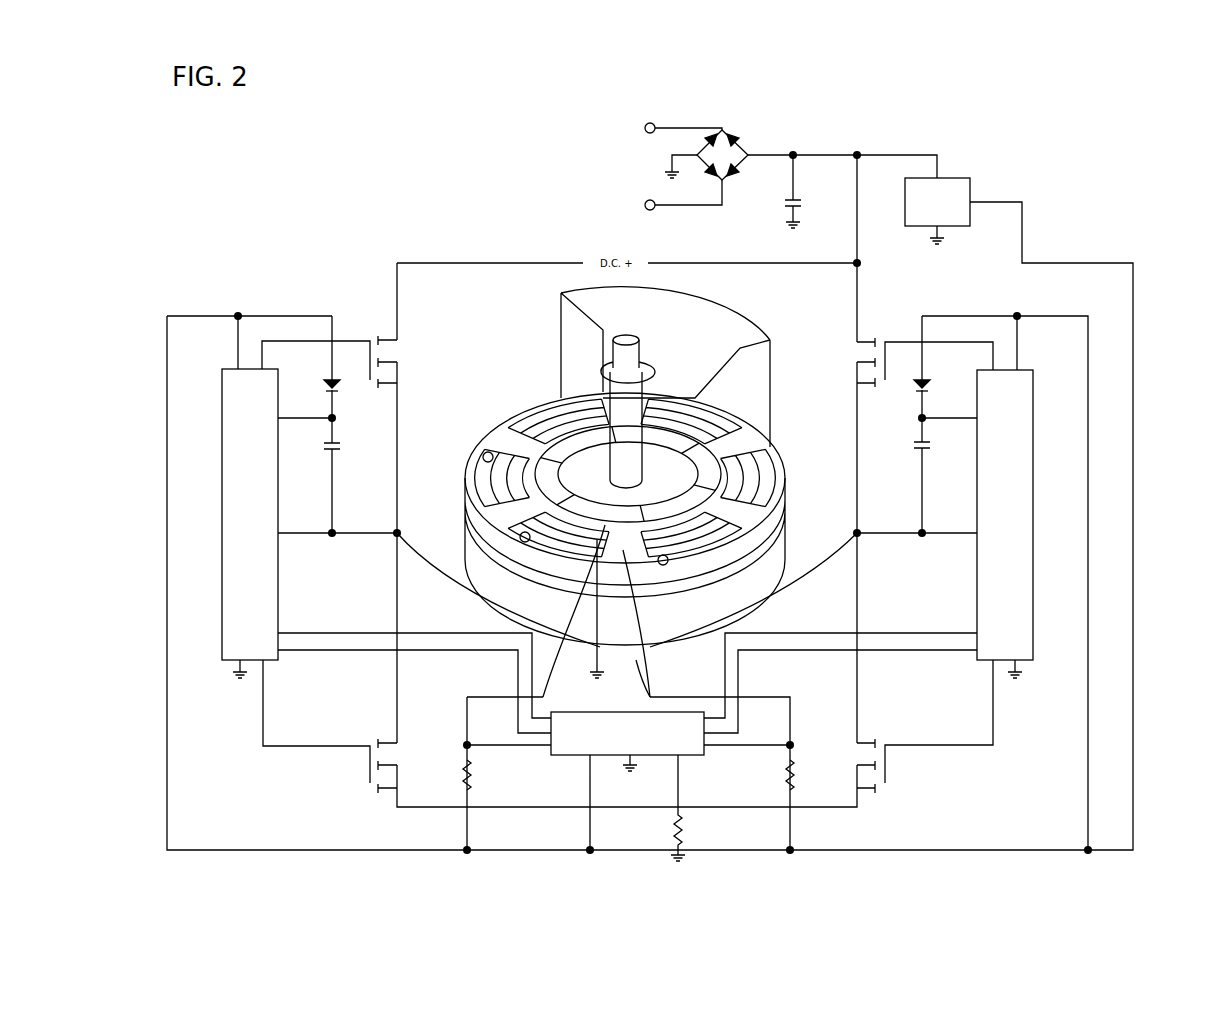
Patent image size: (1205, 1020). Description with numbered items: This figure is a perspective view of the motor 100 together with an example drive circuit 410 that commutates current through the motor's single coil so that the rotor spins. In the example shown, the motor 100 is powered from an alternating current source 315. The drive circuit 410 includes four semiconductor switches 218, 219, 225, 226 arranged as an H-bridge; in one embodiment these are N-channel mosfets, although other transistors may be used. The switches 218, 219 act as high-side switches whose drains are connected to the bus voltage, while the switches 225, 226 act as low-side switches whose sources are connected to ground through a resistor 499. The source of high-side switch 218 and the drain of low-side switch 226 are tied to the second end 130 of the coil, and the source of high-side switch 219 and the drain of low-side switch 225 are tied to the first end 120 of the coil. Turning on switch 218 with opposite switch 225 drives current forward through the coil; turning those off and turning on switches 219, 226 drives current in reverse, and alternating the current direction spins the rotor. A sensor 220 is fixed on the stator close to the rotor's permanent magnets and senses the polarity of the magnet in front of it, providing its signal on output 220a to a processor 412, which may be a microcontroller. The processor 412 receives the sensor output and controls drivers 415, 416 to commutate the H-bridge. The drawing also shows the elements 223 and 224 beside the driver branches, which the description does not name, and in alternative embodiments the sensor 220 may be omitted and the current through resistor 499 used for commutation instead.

The motor 100 is at (510, 375).
The first end 120 is at (859, 535).
The second end 130 is at (397, 535).
The semiconductor switch 218 is at (380, 331).
The semiconductor switch 219 is at (870, 325).
The sensor 220 is at (606, 526).
The output 220a is at (641, 688).
The capacitor 223 is at (918, 450).
The capacitor 224 is at (333, 453).
The semiconductor switch 225 is at (870, 732).
The semiconductor switch 226 is at (380, 737).
The alternating current source 315 is at (612, 156).
The drive circuit 410 is at (1086, 182).
The processor 412 is at (562, 742).
The driver 415 is at (1012, 578).
The driver 416 is at (229, 578).
The resistor 499 is at (664, 822).